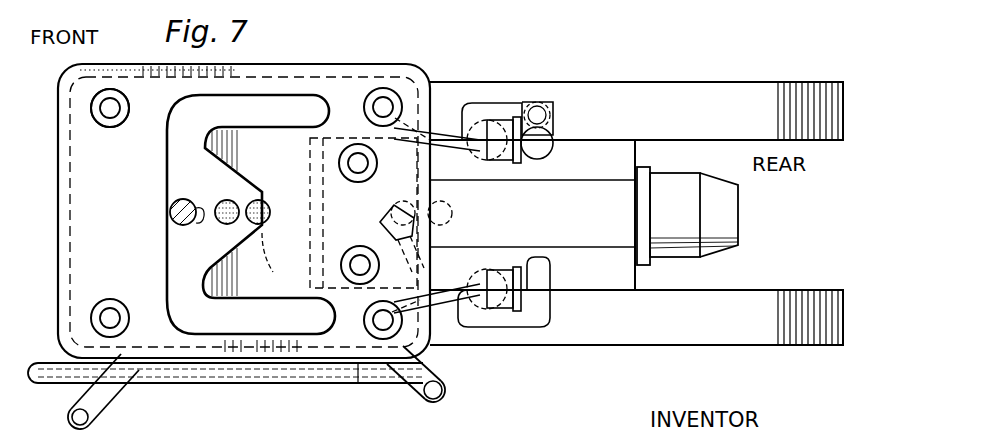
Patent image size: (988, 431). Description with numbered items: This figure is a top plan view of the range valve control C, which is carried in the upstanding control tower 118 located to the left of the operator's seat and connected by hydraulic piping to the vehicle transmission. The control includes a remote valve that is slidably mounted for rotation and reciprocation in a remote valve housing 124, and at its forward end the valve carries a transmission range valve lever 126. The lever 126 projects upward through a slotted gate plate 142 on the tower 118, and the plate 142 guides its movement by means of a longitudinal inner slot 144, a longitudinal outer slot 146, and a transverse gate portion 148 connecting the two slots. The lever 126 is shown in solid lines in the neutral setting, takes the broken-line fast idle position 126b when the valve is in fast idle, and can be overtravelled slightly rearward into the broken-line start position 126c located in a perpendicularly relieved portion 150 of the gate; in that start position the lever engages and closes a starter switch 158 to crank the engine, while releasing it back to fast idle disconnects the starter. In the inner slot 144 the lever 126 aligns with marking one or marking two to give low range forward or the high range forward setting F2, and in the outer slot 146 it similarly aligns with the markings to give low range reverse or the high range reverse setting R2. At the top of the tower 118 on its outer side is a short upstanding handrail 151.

The slotted gate plate 142 is at (292, 48).
The inner slot 144 is at (310, 100).
The transverse gate portion 148 is at (165, 128).
The transmission range valve lever 126 is at (198, 203).
The fast idle position of the valve lever 126b is at (222, 226).
The start position of the valve lever 126c is at (281, 266).
The perpendicularly relieved portion of the gate 150 is at (257, 190).
The control tower 118 is at (502, 92).
The remote valve housing 124 is at (678, 190).
The outer slot 146 is at (283, 322).
The starter switch 158 is at (48, 377).
The handrail 151 is at (405, 370).
The range valve control C is at (218, 372).
The high range forward setting F2 is at (553, 128).
The high range reverse setting R2 is at (548, 290).